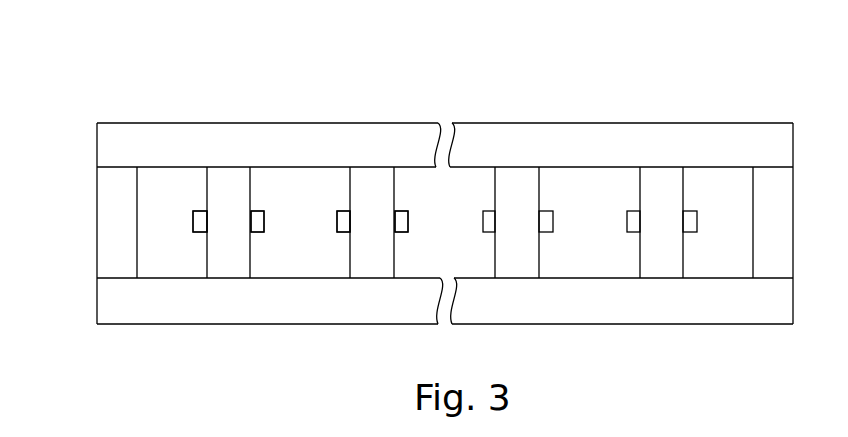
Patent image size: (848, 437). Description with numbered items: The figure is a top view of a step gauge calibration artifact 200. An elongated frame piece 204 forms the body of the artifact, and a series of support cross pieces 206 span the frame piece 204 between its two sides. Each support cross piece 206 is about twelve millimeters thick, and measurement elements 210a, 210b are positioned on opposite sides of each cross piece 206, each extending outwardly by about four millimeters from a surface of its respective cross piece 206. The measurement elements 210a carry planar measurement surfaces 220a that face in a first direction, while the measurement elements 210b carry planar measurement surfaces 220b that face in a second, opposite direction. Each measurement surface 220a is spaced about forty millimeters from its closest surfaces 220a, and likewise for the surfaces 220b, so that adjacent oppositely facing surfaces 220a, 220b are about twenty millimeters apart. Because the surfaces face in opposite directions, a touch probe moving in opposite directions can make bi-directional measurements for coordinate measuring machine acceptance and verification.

The calibration artifact 200 is at (148, 45).
The elongated frame piece 204 is at (758, 137).
The support cross piece 206 is at (235, 268).
The measurement element 210a is at (198, 225).
The measurement element 210b is at (258, 213).
The planar measurement surface 220a is at (190, 220).
The planar measurement surface 220b is at (265, 220).